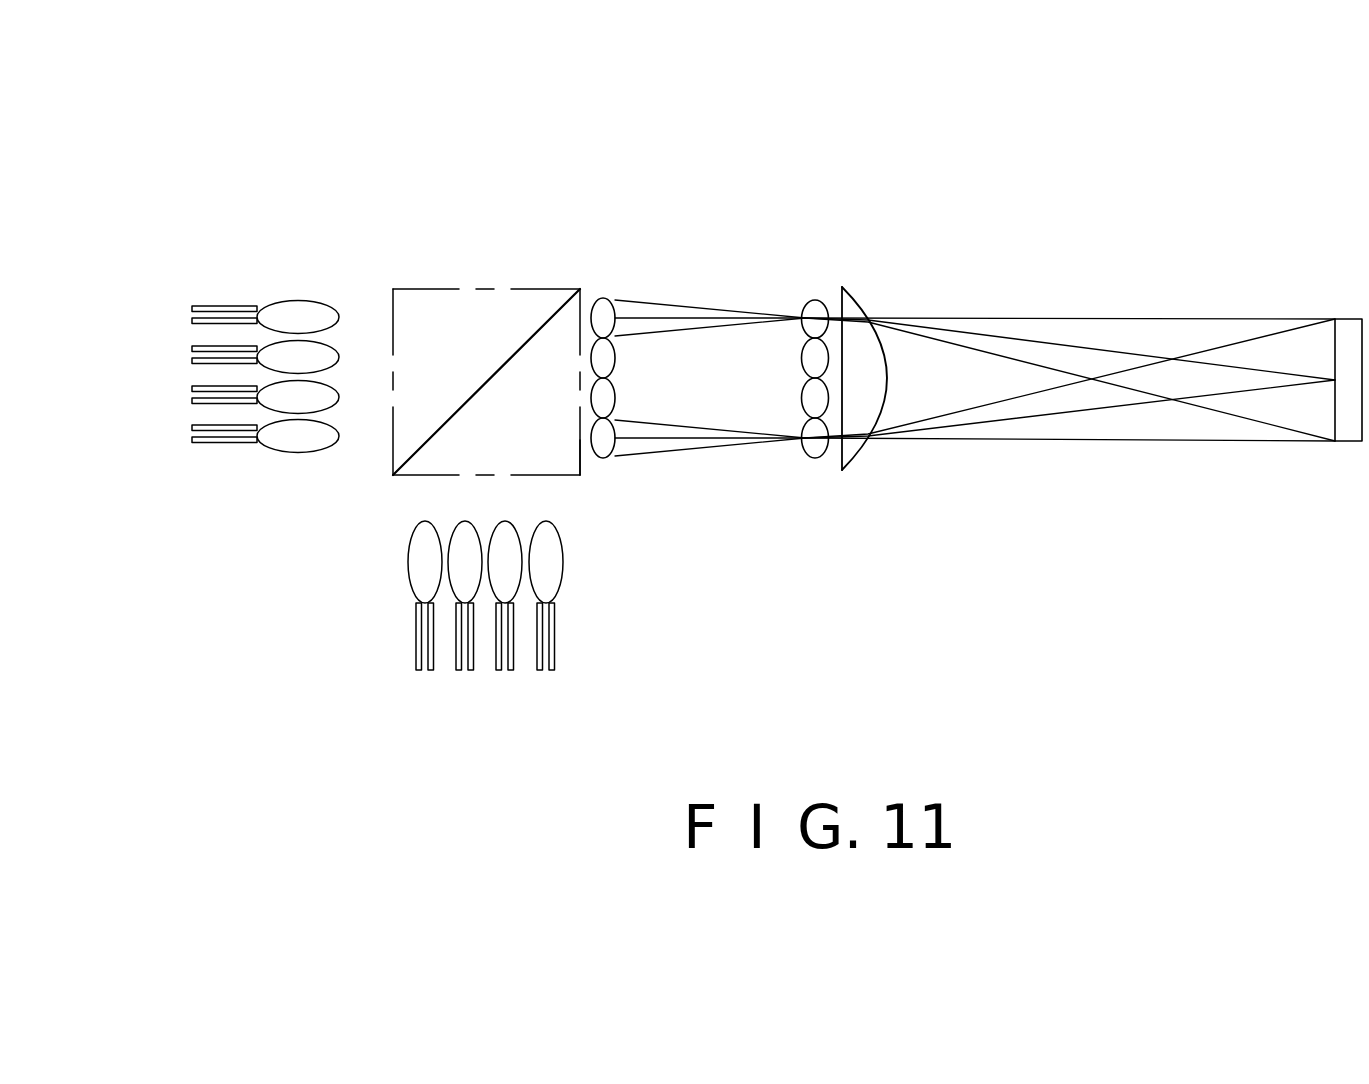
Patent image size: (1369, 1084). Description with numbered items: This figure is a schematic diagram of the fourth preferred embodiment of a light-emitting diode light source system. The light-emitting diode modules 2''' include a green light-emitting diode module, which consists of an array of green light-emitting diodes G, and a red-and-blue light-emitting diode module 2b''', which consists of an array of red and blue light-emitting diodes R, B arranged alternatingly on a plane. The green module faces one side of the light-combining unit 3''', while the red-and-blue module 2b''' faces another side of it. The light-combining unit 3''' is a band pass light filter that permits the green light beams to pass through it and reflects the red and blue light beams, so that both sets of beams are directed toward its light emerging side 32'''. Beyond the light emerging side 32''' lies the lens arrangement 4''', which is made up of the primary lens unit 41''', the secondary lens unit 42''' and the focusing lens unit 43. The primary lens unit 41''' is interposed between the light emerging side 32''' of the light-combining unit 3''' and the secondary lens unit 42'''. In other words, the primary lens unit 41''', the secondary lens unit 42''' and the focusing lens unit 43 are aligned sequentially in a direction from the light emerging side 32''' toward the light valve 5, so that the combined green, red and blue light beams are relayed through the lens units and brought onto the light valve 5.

The light-emitting diode modules 2''' is at (188, 383).
The red-and-blue light-emitting diode module 2b''' is at (460, 648).
The green light-emitting diodes G is at (237, 427).
The blue light-emitting diodes B is at (418, 634).
The red light-emitting diodes R is at (460, 634).
The light-combining unit 3''' is at (486, 310).
The light emerging side 32''' is at (619, 484).
The lens system 4''' is at (748, 235).
The primary lens unit 41''' is at (655, 394).
The secondary lens unit 42''' is at (809, 414).
The focusing lens unit 43 is at (850, 452).
The light valve 5 is at (1352, 336).